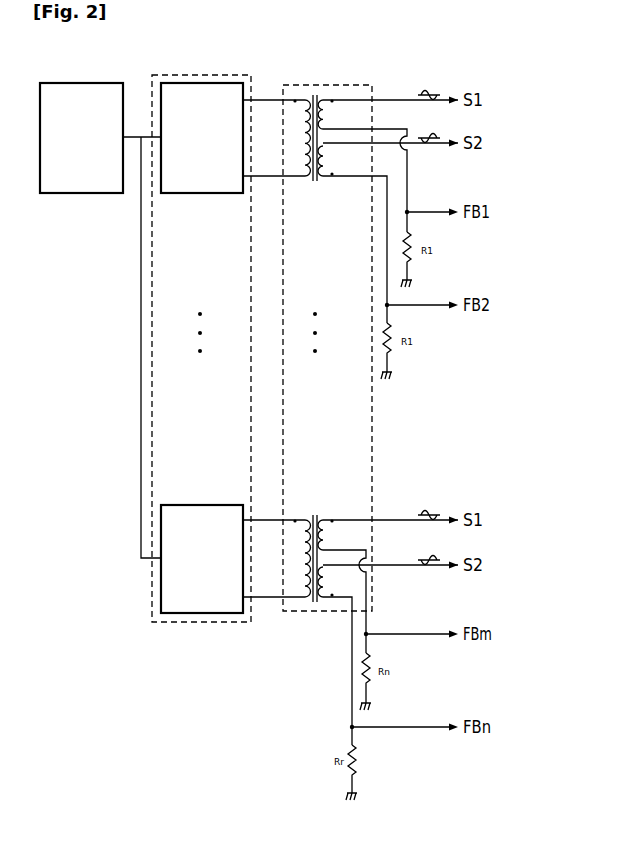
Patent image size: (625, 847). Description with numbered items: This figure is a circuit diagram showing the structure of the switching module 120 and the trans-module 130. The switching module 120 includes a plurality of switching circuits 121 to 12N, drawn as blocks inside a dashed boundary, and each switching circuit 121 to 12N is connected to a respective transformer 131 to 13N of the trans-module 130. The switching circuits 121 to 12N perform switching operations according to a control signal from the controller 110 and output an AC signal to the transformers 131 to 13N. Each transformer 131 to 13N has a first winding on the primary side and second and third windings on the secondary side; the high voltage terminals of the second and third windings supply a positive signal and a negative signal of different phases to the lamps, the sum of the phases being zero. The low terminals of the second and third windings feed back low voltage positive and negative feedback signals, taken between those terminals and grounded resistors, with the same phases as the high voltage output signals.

The controller 110 is at (80, 83).
The switching module 120 is at (200, 622).
The switching circuit 121 is at (200, 83).
The switching circuit 12N is at (200, 505).
The trans-module 130 is at (347, 85).
The transformer 131 is at (309, 92).
The transformer 13N is at (320, 504).